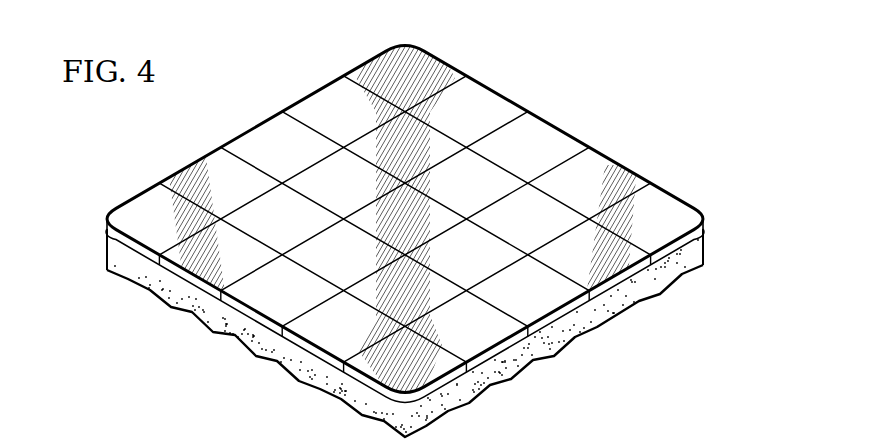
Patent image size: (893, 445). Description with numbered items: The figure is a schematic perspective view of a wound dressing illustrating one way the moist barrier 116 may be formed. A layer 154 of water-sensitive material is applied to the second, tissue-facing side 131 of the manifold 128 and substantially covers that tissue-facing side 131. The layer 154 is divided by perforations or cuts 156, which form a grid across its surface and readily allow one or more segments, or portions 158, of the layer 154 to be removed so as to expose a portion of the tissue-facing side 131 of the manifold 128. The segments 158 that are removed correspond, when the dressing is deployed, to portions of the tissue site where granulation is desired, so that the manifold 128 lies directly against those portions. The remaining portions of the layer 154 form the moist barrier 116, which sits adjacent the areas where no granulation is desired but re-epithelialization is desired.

The moist barrier 116 is at (317, 100).
The manifold 128 is at (701, 247).
The second, tissue-facing side 131 is at (701, 233).
The layer of water-sensitive material 154 is at (473, 92).
The perforations or cuts 156 is at (497, 163).
The segments or portions 158 is at (272, 213).